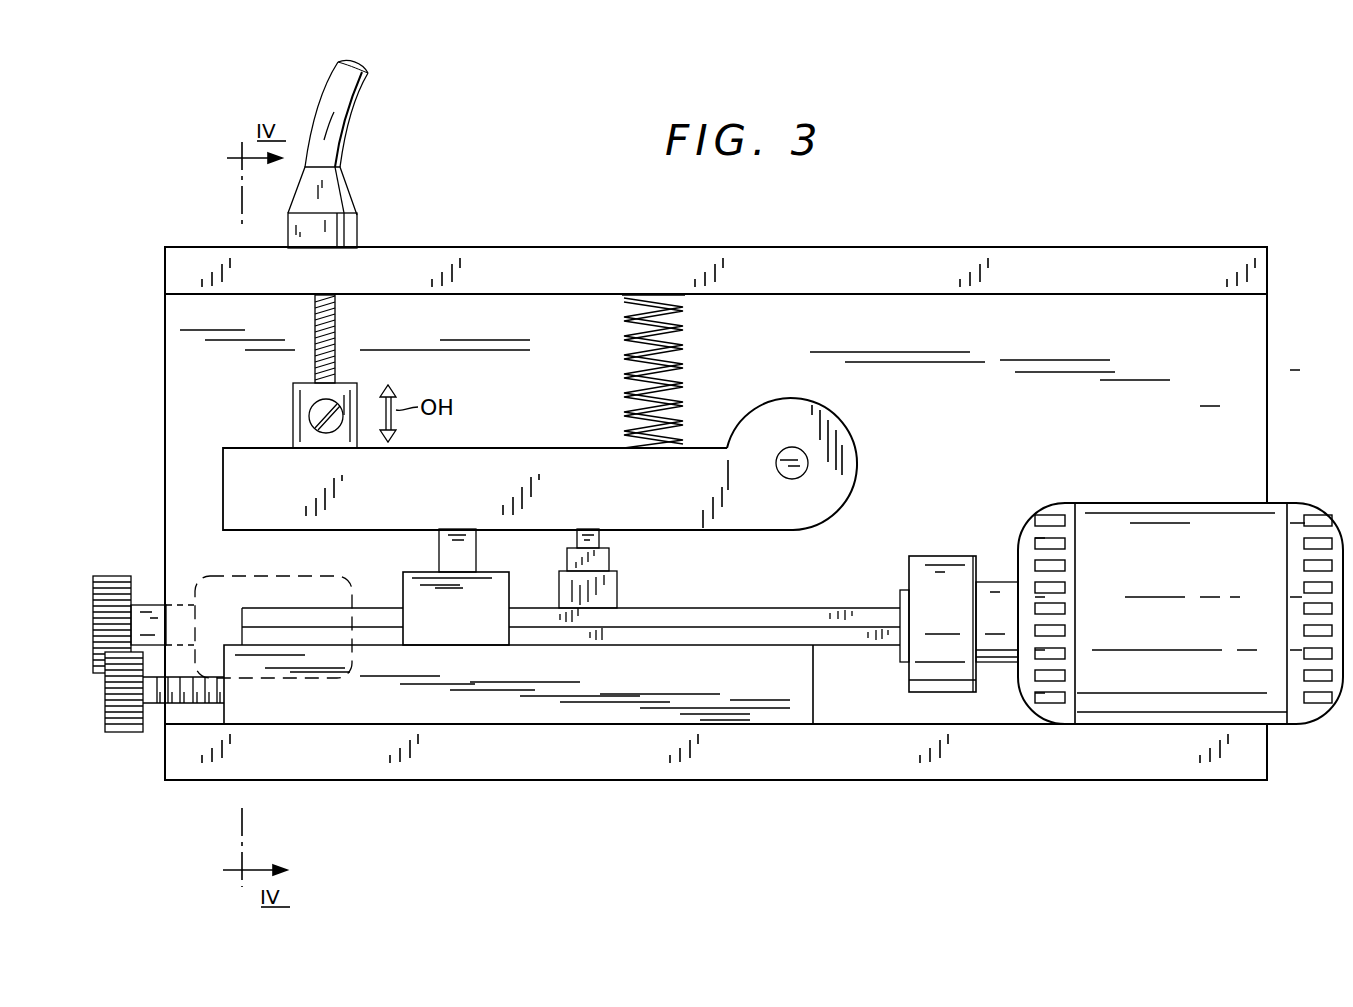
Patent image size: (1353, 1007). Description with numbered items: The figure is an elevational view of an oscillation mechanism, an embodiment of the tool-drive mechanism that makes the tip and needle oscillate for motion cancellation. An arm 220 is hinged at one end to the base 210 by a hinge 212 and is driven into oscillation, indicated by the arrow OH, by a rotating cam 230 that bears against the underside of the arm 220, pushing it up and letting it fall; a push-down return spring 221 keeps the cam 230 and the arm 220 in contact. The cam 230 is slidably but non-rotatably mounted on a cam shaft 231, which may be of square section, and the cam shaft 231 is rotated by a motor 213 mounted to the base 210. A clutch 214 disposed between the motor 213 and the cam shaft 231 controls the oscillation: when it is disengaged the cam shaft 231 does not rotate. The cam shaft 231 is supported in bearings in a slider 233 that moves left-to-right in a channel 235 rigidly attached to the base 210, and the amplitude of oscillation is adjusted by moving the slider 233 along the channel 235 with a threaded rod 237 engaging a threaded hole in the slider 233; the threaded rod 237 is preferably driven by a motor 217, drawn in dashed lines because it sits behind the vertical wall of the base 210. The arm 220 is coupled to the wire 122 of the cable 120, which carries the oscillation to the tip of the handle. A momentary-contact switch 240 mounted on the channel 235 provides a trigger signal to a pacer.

The cable 120 is at (348, 145).
The wire 122 is at (340, 345).
The base 210 is at (165, 437).
The hinge 212 is at (808, 465).
The motor 213 is at (1145, 512).
The clutch 214 is at (933, 556).
The motor 217 is at (216, 576).
The arm 220 is at (696, 458).
The push-down return spring 221 is at (688, 348).
The cam 230 is at (458, 530).
The cam shaft 231 is at (850, 640).
The slider 233 is at (502, 602).
The channel 235 is at (722, 715).
The threaded rod 237 is at (157, 705).
The momentary-contact switch 240 is at (618, 580).